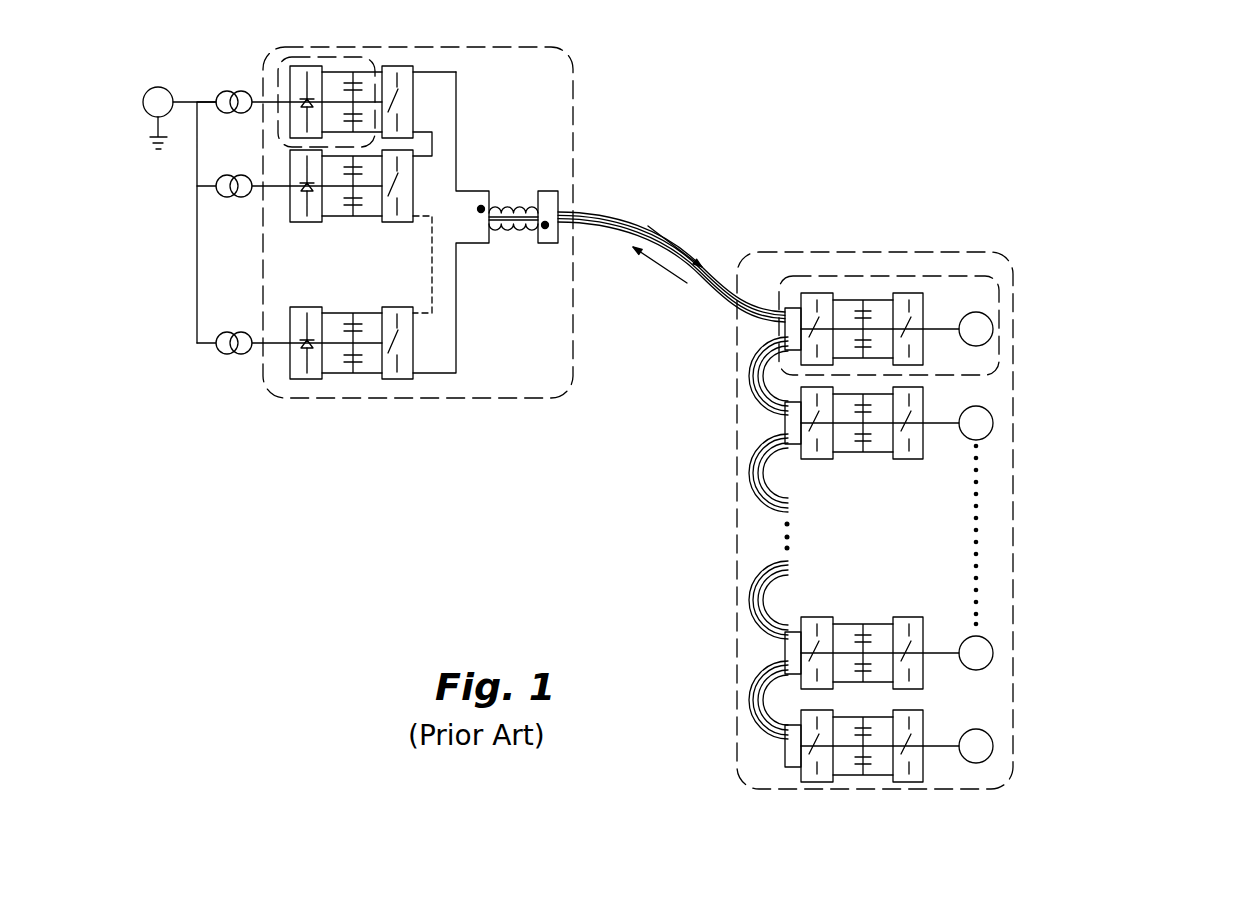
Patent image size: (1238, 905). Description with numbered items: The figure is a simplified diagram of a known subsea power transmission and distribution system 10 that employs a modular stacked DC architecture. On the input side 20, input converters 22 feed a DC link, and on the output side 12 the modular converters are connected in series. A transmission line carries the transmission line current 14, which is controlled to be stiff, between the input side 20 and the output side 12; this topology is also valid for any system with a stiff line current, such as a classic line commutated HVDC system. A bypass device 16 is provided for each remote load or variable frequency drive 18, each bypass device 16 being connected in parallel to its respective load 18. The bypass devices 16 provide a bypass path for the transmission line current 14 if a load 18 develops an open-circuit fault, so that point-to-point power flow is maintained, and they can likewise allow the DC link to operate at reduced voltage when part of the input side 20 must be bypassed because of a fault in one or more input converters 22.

The subsea power transmission and distribution system 10 is at (679, 418).
The output side 12 is at (908, 497).
The transmission line current 14 is at (671, 264).
The bypass device 16 is at (591, 208).
The remote load / variable frequency drive (VFD) 18 is at (889, 290).
The input side 20 is at (387, 222).
The input converter 22 is at (289, 102).